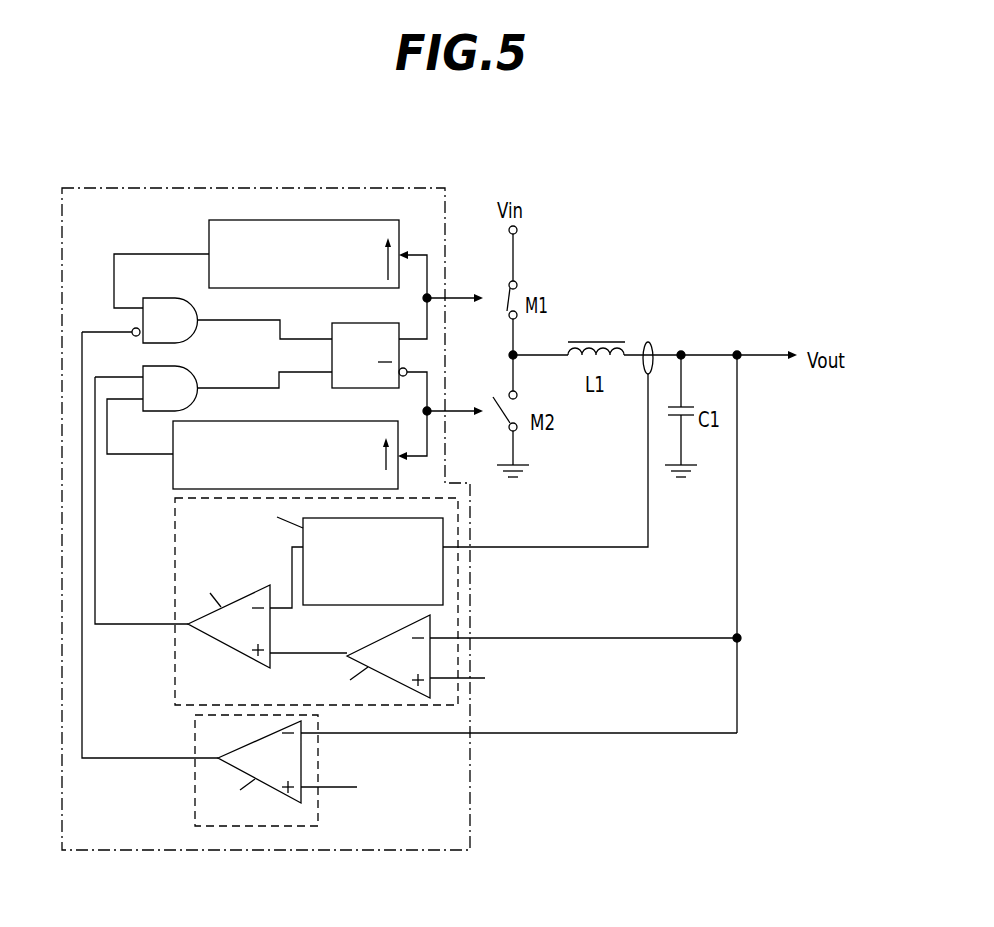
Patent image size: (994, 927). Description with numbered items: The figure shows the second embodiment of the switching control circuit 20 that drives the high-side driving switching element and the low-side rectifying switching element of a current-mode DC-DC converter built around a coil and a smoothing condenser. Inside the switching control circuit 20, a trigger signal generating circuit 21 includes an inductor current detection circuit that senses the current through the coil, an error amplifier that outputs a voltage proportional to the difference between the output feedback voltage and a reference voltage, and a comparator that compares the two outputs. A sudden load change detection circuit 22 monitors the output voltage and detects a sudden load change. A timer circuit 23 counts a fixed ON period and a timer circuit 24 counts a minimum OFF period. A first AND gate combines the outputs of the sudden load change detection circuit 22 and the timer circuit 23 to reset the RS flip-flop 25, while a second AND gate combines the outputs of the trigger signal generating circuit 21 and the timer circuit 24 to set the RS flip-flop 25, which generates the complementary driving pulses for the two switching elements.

The switching control circuit 20 is at (471, 819).
The trigger signal generating circuit 21 is at (175, 645).
The sudden load change detection circuit 22 is at (192, 785).
The timer circuit 23 is at (209, 235).
The timer circuit 24 is at (173, 464).
The RS flip-flop 25 is at (330, 380).